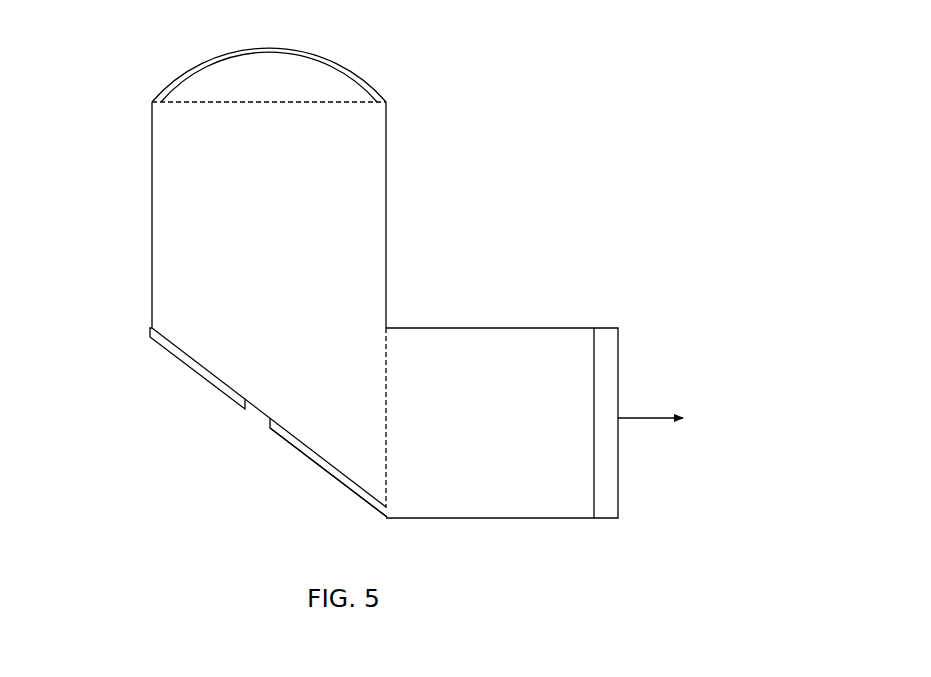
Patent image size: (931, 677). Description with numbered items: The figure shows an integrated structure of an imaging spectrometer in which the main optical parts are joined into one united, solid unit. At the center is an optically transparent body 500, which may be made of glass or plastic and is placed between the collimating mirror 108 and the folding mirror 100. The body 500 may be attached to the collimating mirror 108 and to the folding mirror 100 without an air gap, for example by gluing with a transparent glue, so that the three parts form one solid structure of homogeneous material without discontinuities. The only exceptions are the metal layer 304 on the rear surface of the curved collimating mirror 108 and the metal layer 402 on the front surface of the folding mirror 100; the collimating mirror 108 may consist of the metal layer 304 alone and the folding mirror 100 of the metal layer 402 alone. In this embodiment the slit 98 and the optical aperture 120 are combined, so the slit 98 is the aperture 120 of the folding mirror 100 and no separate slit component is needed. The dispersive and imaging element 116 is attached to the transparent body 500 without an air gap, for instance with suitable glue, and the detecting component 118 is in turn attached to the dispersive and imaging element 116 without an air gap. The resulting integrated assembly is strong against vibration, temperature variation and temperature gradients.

The optically transparent body 500 is at (288, 249).
The metal layer 304 is at (326, 59).
The collimating mirror 108 is at (127, 82).
The slit 98 is at (268, 422).
The optical aperture 120 is at (255, 415).
The metal layer 402 is at (317, 463).
The dispersive and imaging element 116 is at (514, 436).
The detecting component 118 is at (605, 327).
The folding mirror 100 is at (195, 403).